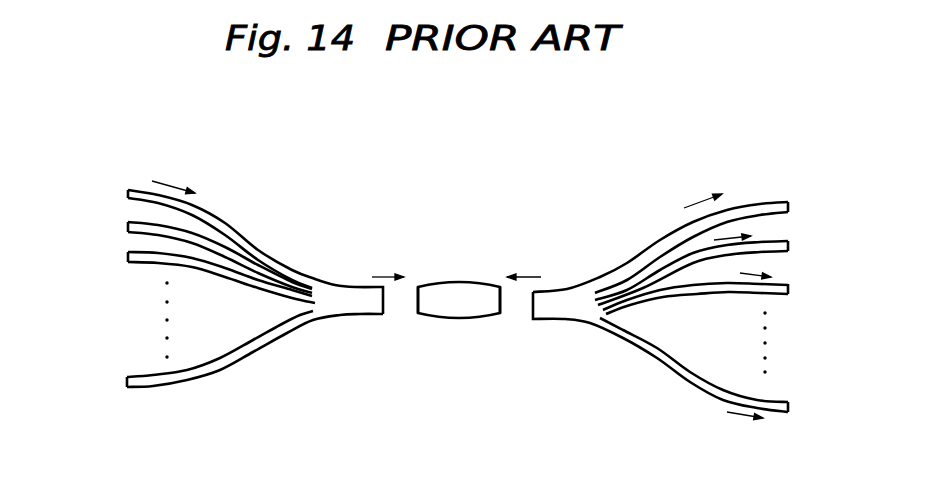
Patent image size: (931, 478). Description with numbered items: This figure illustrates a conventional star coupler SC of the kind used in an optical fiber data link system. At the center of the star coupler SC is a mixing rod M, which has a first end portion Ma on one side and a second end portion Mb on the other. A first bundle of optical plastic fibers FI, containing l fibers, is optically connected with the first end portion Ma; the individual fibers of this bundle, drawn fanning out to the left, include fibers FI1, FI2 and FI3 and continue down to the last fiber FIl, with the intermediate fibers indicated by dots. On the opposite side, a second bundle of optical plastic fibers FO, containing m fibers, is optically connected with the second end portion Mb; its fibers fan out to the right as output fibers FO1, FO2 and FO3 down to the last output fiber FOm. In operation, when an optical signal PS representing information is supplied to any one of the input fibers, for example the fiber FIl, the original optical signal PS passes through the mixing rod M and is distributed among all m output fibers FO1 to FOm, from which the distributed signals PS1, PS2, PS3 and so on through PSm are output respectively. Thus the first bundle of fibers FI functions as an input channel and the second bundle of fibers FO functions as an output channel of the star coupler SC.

The first bundle of optical plastic fibers FI is at (342, 315).
The optical plastic fiber of the first bundle FI1 is at (128, 189).
The optical plastic fiber of the first bundle FI2 is at (128, 227).
The optical plastic fiber of the first bundle FI3 is at (128, 259).
The l-th optical plastic fiber of the first bundle FIl is at (128, 380).
The optical signal PS is at (177, 171).
The mixing rod M is at (455, 287).
The first end portion of the mixing rod Ma is at (418, 297).
The second end portion of the mixing rod Mb is at (500, 297).
The star coupler SC is at (589, 196).
The second bundle of optical plastic fibers FO is at (572, 323).
The first output optical fiber FO1 is at (773, 200).
The second output optical fiber FO2 is at (787, 246).
The third output optical fiber FO3 is at (788, 286).
The m-th output optical fiber FOm is at (778, 400).
The distributed optical signal PS1 is at (697, 184).
The distributed optical signal PS2 is at (733, 230).
The distributed optical signal PS3 is at (760, 267).
The distributed optical signal PSm is at (757, 432).